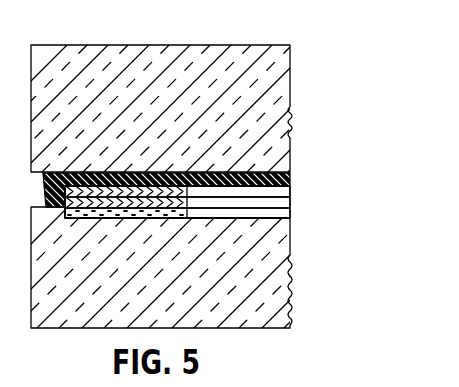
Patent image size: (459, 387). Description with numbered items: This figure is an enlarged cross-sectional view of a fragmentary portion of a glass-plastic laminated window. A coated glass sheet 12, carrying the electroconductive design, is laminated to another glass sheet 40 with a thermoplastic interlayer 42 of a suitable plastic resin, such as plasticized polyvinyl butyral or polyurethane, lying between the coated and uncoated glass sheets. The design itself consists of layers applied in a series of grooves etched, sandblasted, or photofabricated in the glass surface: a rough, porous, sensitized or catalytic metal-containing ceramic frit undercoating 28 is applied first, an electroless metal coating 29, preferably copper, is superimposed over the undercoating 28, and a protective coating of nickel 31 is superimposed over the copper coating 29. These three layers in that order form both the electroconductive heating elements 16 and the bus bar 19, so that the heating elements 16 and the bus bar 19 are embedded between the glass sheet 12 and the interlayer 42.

The glass sheet 12 is at (290, 288).
The electroconductive heating elements 16 is at (230, 210).
The bus bar 19 is at (128, 231).
The porous undercoating 28 is at (290, 212).
The electroless metal coating 29 is at (290, 202).
The protective coating of nickel 31 is at (290, 191).
The glass sheet 40 is at (290, 96).
The thermoplastic interlayer 42 is at (290, 181).